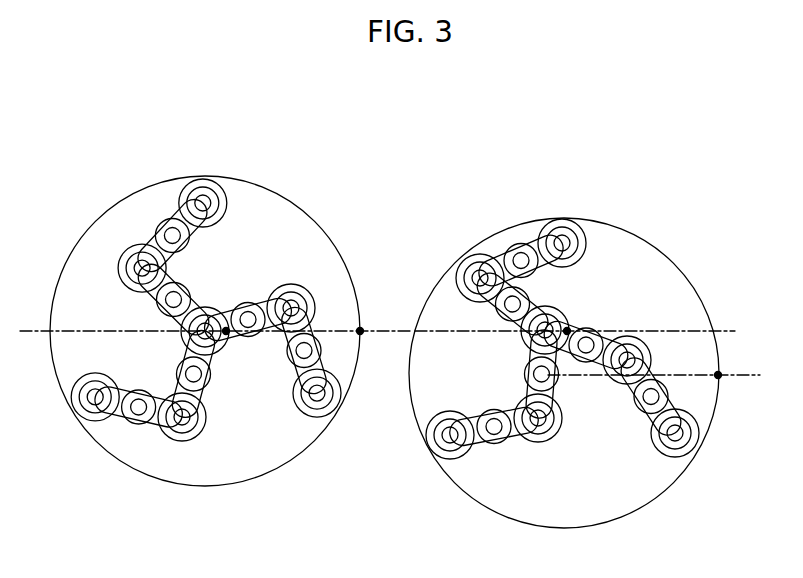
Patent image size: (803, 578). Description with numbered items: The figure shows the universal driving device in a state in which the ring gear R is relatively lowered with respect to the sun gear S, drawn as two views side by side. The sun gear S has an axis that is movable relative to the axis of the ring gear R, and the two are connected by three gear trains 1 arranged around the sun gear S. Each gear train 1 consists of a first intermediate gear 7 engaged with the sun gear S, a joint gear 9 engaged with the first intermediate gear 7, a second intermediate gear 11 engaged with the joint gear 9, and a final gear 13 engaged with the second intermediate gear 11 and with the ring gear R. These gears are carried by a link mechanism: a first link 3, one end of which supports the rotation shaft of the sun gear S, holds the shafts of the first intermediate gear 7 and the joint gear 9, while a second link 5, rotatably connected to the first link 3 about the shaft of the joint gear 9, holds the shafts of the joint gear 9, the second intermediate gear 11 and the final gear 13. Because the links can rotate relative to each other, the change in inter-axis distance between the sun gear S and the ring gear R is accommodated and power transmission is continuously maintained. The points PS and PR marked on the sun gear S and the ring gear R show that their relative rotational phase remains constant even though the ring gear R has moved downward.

The gear train 1 is at (375, 325).
The first link 3 is at (152, 292).
The second link 5 is at (185, 203).
The first intermediate gear 7 is at (190, 283).
The joint gear 9 is at (124, 267).
The second intermediate gear 11 is at (160, 223).
The final gear 13 is at (203, 179).
The ring gear R is at (258, 187).
The point marked on the ring gear PR is at (362, 329).
The point marked on the sun gear PS is at (228, 334).
The sun gear S is at (228, 334).